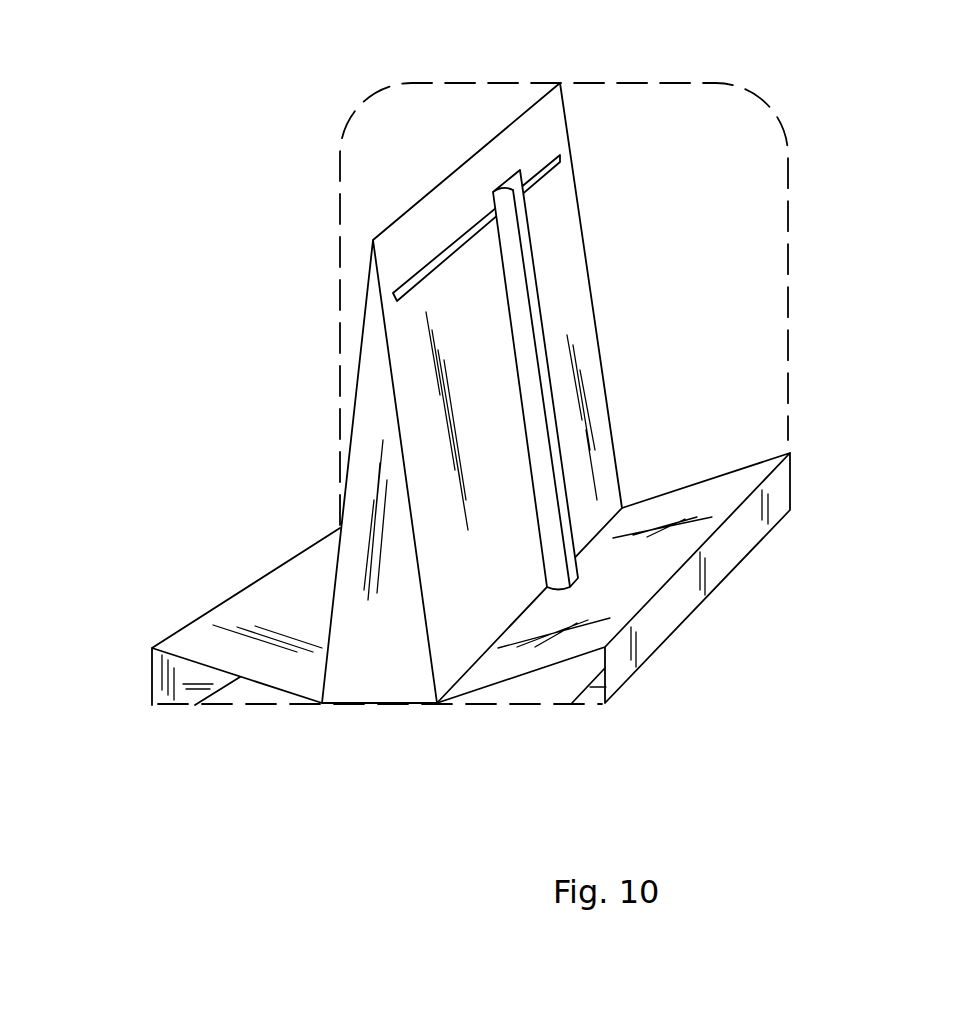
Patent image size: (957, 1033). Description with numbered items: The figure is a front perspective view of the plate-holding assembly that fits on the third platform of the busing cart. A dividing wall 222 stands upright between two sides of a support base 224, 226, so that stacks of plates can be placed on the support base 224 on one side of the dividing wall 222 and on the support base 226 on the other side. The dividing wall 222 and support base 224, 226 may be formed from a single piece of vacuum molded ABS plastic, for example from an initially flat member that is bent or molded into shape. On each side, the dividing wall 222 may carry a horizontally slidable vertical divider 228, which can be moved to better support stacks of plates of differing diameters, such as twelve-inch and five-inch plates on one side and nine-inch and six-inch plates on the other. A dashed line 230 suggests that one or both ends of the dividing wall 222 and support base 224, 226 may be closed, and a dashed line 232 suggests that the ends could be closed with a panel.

The dividing wall 222 is at (492, 132).
The support base 224 is at (277, 593).
The support base 226 is at (728, 492).
The horizontally slidable vertical divider 228 is at (540, 282).
The dashed line 230 is at (503, 704).
The dashed line 232 is at (788, 175).